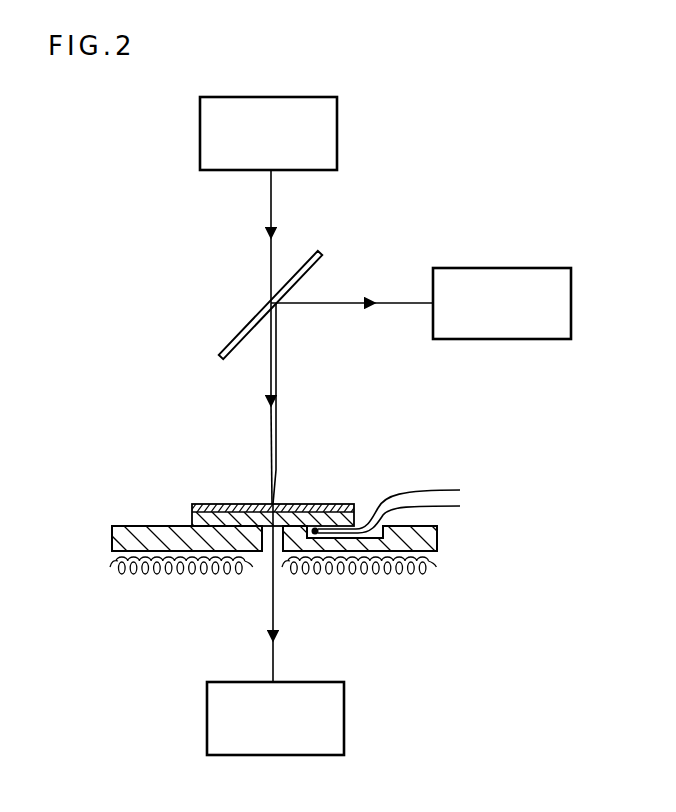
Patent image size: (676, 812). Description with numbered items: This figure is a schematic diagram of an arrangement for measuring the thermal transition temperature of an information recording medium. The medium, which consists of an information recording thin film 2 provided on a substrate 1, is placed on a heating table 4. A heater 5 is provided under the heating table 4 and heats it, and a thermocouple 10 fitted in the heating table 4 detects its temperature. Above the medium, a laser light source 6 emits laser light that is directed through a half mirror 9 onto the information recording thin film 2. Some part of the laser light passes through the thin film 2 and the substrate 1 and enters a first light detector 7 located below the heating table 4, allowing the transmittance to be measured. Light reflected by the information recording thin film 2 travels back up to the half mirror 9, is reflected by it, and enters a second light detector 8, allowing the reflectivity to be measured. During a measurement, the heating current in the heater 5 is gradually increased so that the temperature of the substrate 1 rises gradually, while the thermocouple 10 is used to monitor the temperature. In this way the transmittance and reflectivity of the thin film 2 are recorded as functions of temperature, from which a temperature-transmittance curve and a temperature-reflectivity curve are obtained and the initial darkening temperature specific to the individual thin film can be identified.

The substrate 1 is at (362, 513).
The information recording thin film 2 is at (328, 507).
The heating table 4 is at (130, 527).
The heater 5 is at (125, 570).
The laser light source 6 is at (337, 134).
The first light detector 7 is at (344, 727).
The second light detector 8 is at (525, 268).
The half mirror 9 is at (219, 351).
The thermocouple 10 is at (357, 534).